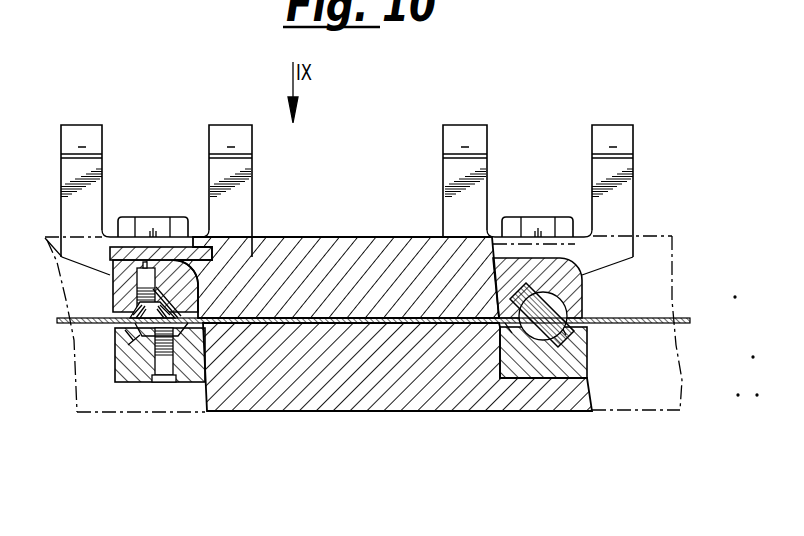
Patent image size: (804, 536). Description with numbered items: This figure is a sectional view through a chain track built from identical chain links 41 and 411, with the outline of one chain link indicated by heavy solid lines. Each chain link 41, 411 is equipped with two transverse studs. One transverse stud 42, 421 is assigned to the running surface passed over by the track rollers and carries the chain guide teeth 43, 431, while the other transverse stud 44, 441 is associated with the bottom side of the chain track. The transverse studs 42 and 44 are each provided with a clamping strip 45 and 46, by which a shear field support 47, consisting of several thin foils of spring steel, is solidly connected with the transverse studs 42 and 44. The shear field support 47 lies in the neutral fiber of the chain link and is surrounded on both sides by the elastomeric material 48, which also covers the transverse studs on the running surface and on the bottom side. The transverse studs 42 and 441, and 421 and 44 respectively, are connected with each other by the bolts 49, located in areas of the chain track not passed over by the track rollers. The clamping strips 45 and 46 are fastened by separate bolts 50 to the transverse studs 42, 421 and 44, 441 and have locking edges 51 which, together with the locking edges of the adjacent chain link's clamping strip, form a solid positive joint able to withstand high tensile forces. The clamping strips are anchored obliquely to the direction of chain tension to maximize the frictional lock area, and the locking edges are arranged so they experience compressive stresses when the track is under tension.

The chain link 41 is at (366, 126).
The chain link 411 is at (658, 136).
The transverse stud 42 is at (197, 290).
The transverse stud 421 is at (576, 281).
The chain guide teeth 43 is at (84, 130).
The chain guide teeth 431 is at (474, 130).
The transverse stud 44 is at (582, 369).
The transverse stud 441 is at (128, 375).
The clamping strip 45 is at (180, 313).
The clamping strip 46 is at (205, 342).
The shear field support 47 is at (363, 318).
The elastomeric material 48 is at (338, 248).
The bolt 49 is at (157, 222).
The bolt 50 is at (143, 280).
The locking edge 51 is at (133, 330).